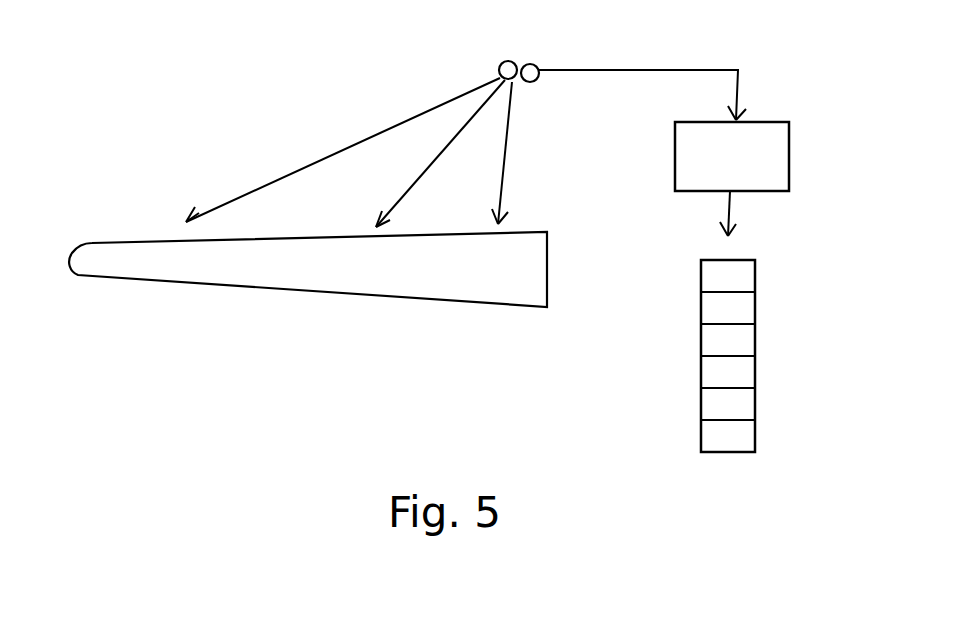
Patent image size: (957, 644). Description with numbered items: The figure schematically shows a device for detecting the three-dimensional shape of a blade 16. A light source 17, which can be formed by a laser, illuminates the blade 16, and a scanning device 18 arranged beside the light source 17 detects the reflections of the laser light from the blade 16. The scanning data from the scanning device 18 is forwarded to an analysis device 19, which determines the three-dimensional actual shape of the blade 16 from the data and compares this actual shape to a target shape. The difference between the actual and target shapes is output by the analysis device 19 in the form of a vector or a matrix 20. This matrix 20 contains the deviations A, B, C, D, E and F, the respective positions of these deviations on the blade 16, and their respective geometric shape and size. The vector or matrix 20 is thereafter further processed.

The blade 16 is at (300, 296).
The light source 17 is at (499, 62).
The scanning device 18 is at (537, 62).
The analysis device 19 is at (790, 146).
The matrix 20 is at (755, 303).